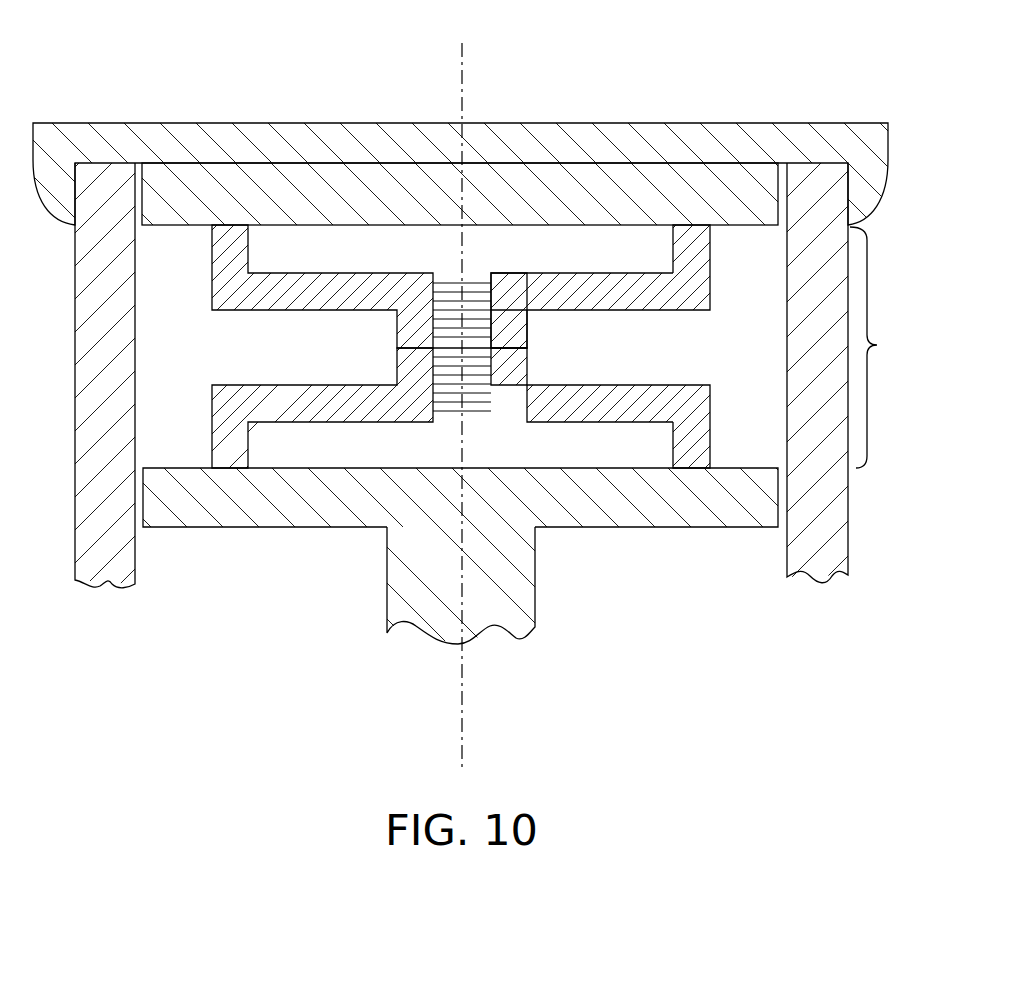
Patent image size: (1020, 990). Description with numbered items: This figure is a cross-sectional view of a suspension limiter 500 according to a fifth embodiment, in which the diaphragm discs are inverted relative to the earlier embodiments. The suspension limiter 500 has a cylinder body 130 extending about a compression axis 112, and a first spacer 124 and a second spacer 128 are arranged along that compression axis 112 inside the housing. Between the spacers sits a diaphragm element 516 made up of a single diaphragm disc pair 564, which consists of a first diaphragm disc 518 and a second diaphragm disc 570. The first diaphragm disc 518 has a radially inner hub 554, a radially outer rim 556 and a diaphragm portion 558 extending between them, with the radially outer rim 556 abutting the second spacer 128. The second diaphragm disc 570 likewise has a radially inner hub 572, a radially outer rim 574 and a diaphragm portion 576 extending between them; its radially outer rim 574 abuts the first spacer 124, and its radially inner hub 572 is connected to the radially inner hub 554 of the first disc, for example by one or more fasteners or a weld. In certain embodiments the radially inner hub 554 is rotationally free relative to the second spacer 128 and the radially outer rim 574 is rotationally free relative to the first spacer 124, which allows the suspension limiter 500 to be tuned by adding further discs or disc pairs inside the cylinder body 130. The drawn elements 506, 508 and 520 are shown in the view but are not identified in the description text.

The compression axis 112 is at (462, 749).
The first spacer 124 is at (268, 185).
The second spacer 128 is at (185, 507).
The cylinder body 130 is at (827, 538).
The suspension limiter 500 is at (157, 708).
The upper retainer 506 is at (372, 243).
The central boss 508 is at (330, 446).
The diaphragm element 516 is at (886, 347).
The first diaphragm disc 518 is at (180, 430).
The cover 520 is at (222, 140).
The radially inner hub 554 is at (517, 358).
The radially outer rim 556 is at (690, 445).
The diaphragm portion 558 is at (622, 407).
The single diaphragm disc pair 564 is at (495, 450).
The second diaphragm disc 570 is at (183, 294).
The radially inner hub 572 is at (505, 327).
The radially outer rim 574 is at (687, 250).
The diaphragm portion 576 is at (622, 287).